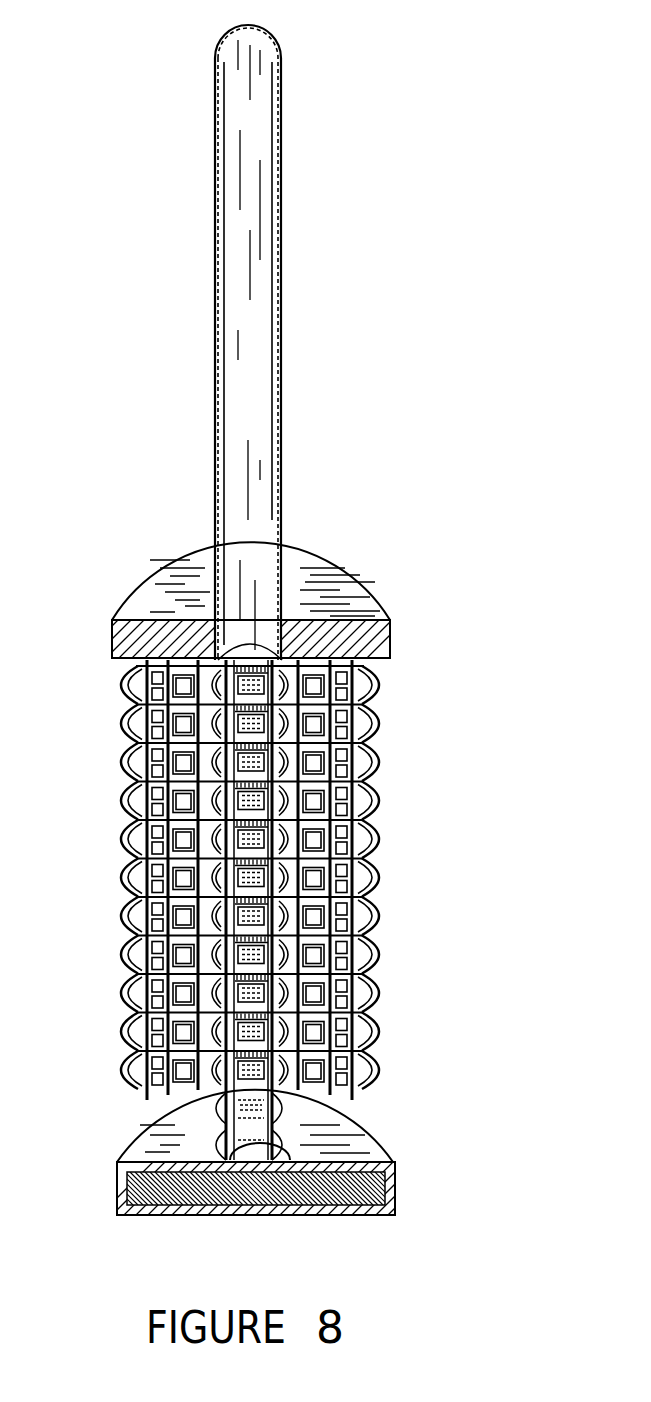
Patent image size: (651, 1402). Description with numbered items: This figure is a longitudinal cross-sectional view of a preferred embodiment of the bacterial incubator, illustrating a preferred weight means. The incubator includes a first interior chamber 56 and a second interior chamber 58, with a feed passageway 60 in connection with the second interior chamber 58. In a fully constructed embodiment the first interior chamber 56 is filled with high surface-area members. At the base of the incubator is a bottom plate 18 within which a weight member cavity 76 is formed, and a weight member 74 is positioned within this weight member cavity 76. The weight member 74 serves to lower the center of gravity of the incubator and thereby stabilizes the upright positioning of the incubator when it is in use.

The feed passageway 60 is at (266, 409).
The first interior chamber 56 is at (211, 1152).
The second interior chamber 58 is at (262, 1148).
The weight member cavity 76 is at (132, 1177).
The weight member 74 is at (205, 1195).
The bottom plate 18 is at (397, 1192).